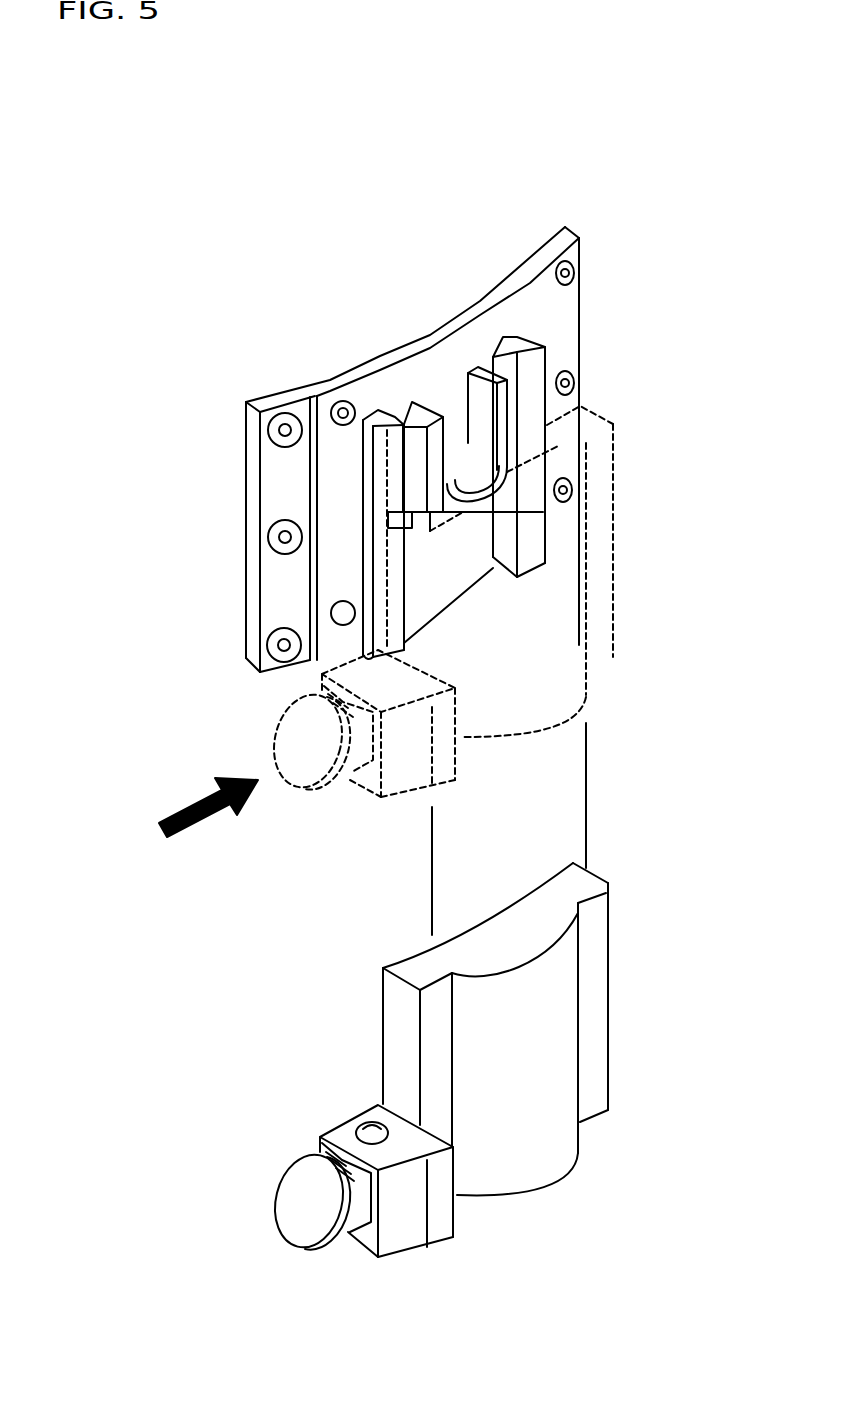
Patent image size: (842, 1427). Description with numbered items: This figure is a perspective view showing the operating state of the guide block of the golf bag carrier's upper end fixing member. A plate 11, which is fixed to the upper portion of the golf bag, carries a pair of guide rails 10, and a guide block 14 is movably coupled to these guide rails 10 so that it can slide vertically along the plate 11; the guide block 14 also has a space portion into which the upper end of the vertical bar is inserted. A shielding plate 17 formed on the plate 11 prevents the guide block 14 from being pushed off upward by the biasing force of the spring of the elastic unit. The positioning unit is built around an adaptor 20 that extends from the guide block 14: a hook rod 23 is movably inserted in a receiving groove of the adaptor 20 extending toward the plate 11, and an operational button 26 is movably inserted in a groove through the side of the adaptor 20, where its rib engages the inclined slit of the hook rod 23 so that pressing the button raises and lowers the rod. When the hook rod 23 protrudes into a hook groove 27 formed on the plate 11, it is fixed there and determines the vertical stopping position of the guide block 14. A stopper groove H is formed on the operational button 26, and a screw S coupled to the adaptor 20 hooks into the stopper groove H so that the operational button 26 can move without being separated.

The guide rails 10 is at (387, 447).
The plate 11 is at (430, 340).
The guide block 14 is at (543, 1155).
The shielding plate 17 is at (400, 502).
The adaptor 20 is at (410, 1230).
The hook rod 23 is at (357, 1115).
The operational button 26 is at (293, 1207).
The hook groove 27 is at (347, 617).
The screw S is at (372, 1123).
The stopper groove H is at (320, 1145).